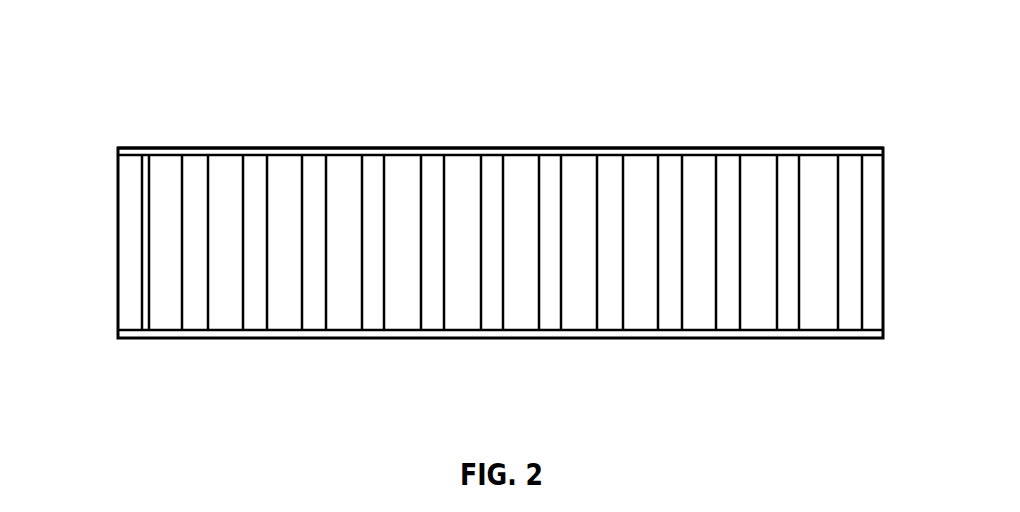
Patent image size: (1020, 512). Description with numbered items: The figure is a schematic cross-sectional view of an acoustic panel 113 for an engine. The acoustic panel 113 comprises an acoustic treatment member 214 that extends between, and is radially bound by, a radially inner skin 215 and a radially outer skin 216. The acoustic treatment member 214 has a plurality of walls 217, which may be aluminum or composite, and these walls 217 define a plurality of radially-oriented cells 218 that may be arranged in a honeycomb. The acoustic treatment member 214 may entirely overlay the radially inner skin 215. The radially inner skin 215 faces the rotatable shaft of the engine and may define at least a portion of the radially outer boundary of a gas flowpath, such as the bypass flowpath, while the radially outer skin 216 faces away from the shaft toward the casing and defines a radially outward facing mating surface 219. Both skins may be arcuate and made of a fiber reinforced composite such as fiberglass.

The acoustic panel 113 is at (166, 42).
The acoustic treatment member 214 is at (253, 228).
The radially inner skin 215 is at (736, 333).
The radially outer skin 216 is at (700, 150).
The walls 217 is at (182, 297).
The radially-oriented cells 218 is at (463, 175).
The mating surface 219 is at (252, 148).